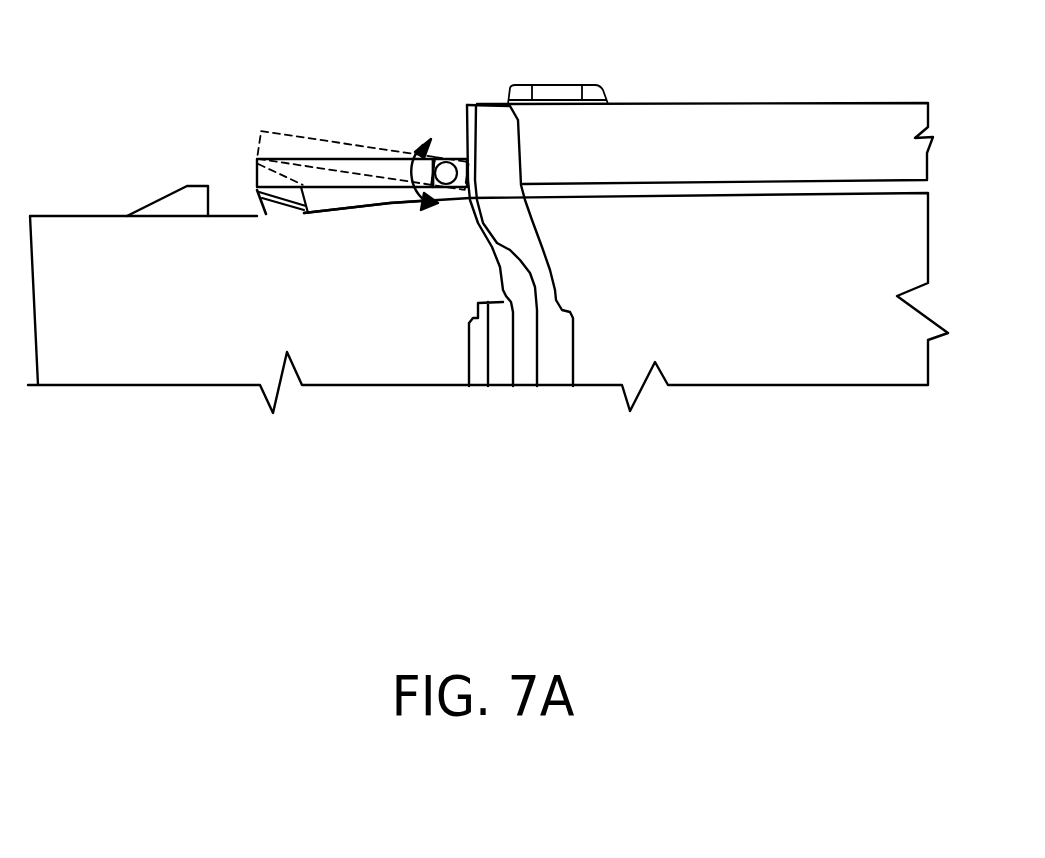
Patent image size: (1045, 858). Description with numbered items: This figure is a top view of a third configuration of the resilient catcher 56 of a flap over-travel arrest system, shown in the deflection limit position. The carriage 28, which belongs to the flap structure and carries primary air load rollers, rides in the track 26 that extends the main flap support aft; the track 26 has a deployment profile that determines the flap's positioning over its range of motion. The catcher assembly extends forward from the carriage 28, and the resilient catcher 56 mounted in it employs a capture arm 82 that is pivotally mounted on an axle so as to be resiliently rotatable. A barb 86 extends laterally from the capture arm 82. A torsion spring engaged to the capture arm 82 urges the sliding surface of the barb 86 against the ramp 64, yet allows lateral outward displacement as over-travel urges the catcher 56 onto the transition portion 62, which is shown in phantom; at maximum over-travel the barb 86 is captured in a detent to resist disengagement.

The track 26 is at (428, 368).
The carriage 28 is at (677, 103).
The resilient catcher 56 is at (295, 153).
The transition portion 62 is at (272, 217).
The ramp 64 is at (300, 204).
The capture arm 82 is at (328, 168).
The barb 86 is at (308, 198).